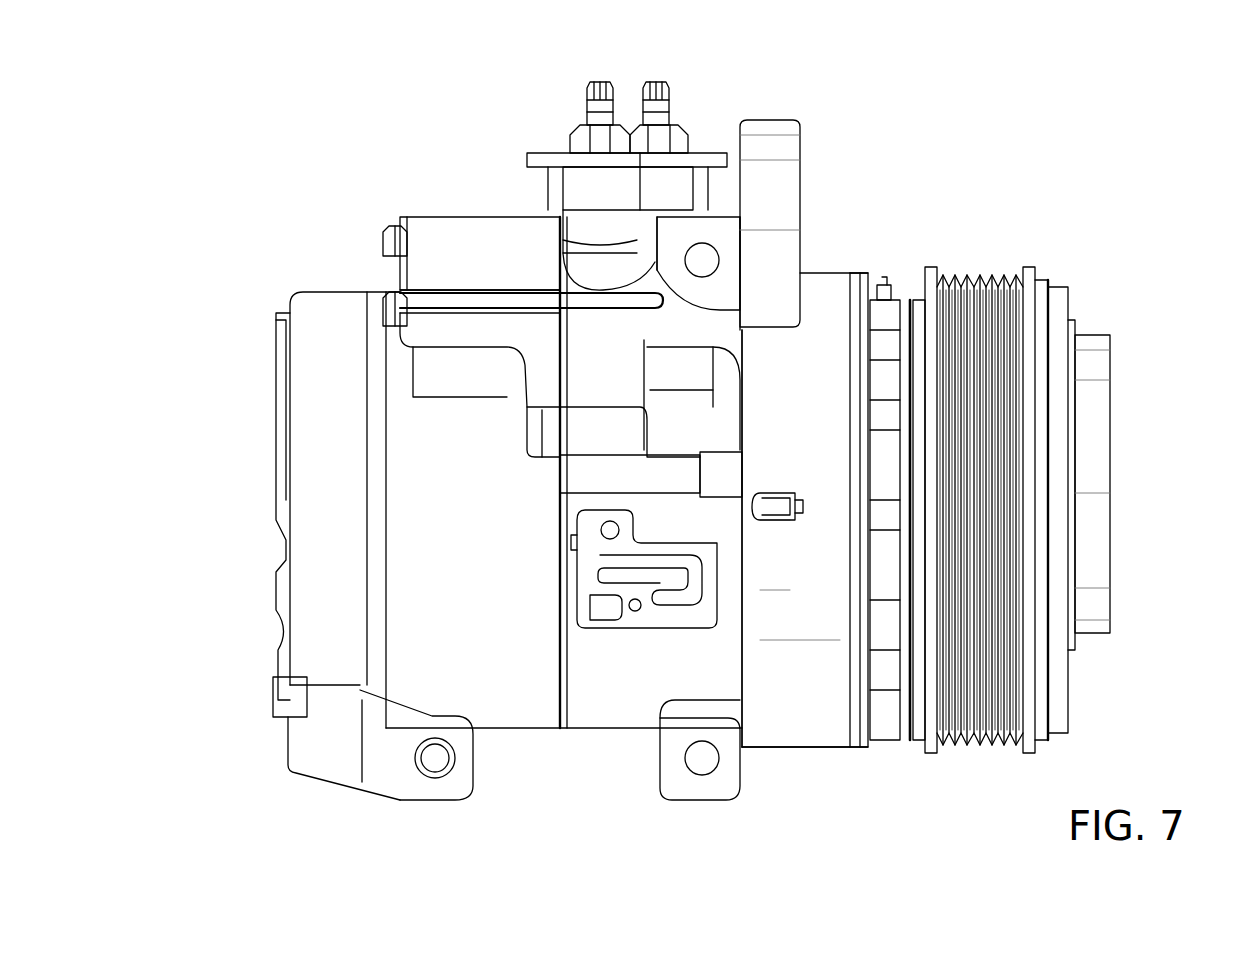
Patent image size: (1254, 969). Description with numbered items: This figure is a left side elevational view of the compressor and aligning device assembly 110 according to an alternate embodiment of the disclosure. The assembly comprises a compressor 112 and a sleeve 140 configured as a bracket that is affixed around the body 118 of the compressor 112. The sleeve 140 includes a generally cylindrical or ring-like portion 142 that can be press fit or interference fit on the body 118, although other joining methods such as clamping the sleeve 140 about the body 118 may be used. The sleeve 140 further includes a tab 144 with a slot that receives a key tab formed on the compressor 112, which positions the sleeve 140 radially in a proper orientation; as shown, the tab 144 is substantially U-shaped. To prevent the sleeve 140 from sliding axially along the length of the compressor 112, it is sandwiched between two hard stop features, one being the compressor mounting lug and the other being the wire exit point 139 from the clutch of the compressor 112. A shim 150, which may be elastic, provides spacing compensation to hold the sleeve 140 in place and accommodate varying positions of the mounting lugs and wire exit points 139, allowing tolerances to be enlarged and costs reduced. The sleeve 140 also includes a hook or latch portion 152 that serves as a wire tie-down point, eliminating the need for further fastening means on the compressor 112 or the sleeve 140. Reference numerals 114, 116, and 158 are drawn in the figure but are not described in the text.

The compressor and aligning device assembly 110 is at (207, 170).
The compressor 112 is at (893, 905).
The front housing 114 is at (797, 408).
The pulley 116 is at (958, 740).
The body 118 is at (530, 712).
The wire exit point 139 is at (892, 290).
The sleeve 140 is at (821, 262).
The ring-like portion 142 is at (797, 607).
The tab 144 is at (767, 127).
The shim 150 is at (855, 273).
The latch portion 152 is at (805, 505).
The mounting boss 158 is at (695, 233).